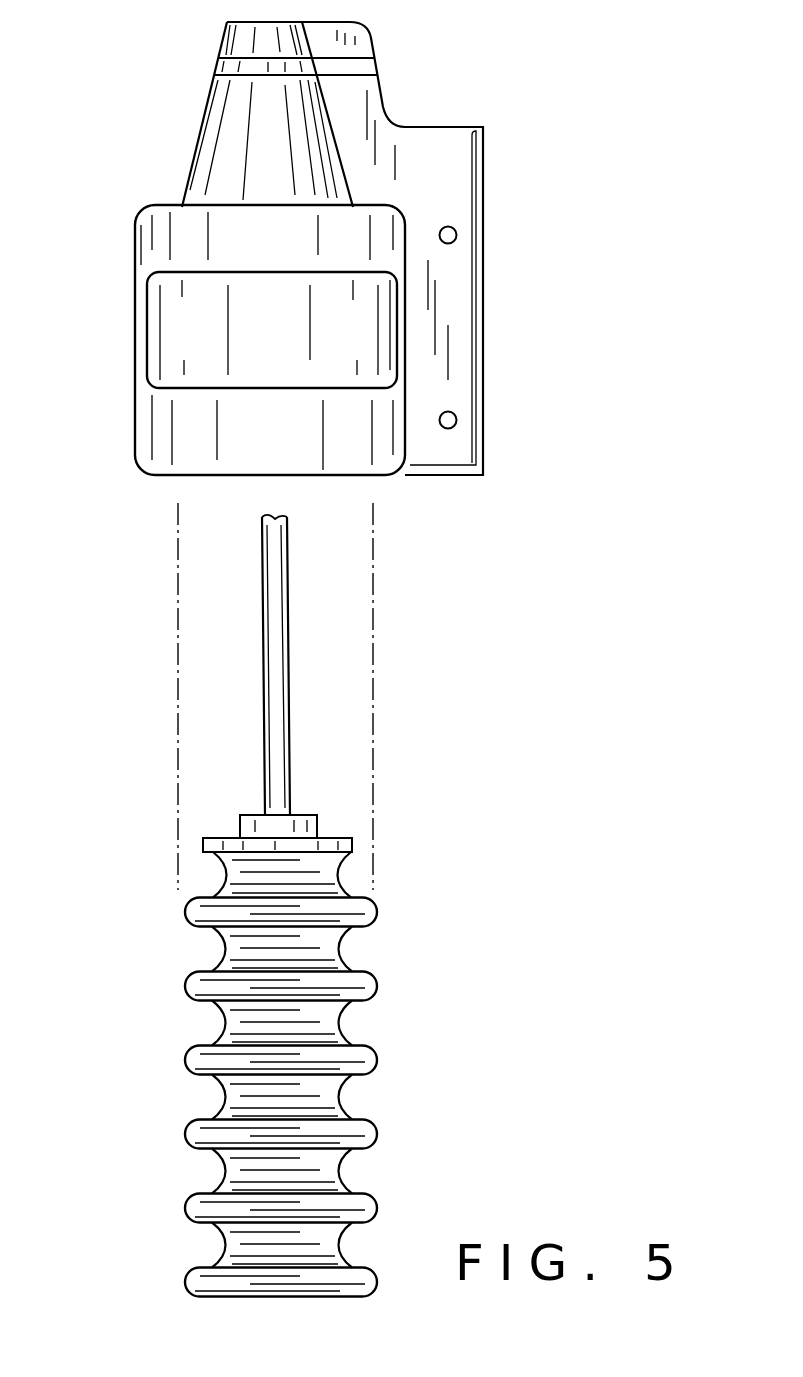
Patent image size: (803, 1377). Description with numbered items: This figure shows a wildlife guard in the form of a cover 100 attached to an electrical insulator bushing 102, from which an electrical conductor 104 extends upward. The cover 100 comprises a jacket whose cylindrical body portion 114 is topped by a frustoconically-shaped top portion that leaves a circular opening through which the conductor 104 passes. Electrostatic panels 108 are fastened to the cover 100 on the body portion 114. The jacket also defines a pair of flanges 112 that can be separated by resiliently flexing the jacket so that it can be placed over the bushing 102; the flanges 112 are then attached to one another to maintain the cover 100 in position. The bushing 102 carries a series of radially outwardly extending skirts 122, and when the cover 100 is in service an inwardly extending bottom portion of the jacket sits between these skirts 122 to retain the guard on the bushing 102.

The cover 100 is at (515, 293).
The electrical insulator bushing 102 is at (222, 1297).
The electrical conductor 104 is at (289, 640).
The electrostatic panels 108 is at (162, 274).
The flanges 112 is at (457, 226).
The cylindrical body portion 114 is at (133, 230).
The skirts 122 is at (368, 975).